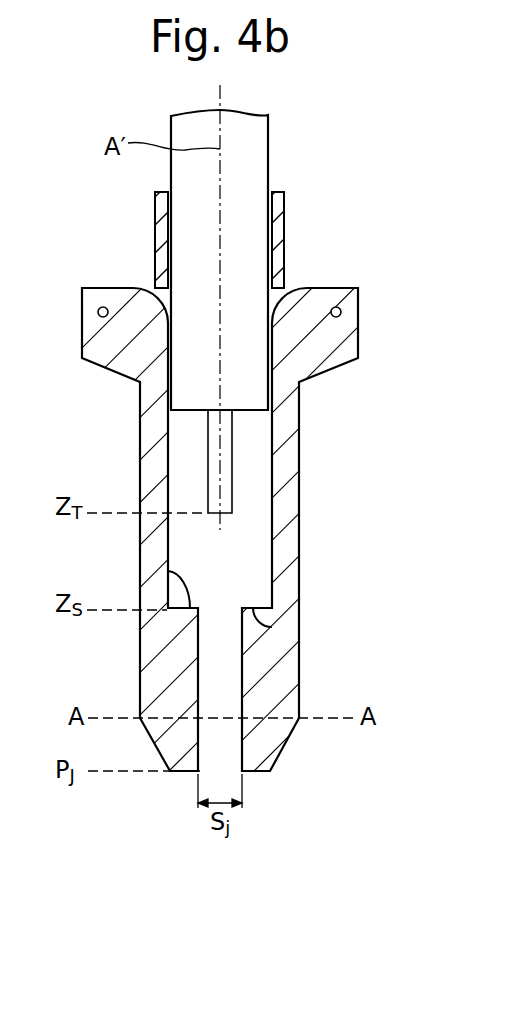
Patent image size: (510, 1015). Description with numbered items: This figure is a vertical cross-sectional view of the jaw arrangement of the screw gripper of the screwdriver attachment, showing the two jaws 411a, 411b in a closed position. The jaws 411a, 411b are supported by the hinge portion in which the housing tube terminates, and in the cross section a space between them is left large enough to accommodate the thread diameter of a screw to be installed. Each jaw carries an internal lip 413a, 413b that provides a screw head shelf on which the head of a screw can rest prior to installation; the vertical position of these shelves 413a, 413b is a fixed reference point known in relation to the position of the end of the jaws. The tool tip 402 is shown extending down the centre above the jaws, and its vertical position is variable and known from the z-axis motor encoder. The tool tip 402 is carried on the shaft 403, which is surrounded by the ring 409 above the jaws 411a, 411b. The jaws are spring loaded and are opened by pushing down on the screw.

The shaft 403 is at (250, 152).
The sealing ring 409 is at (155, 226).
The tool tip 402 is at (228, 515).
The jaw 411a is at (160, 673).
The jaw 411b is at (283, 680).
The internal lip 413a is at (172, 576).
The internal lip 413b is at (265, 624).